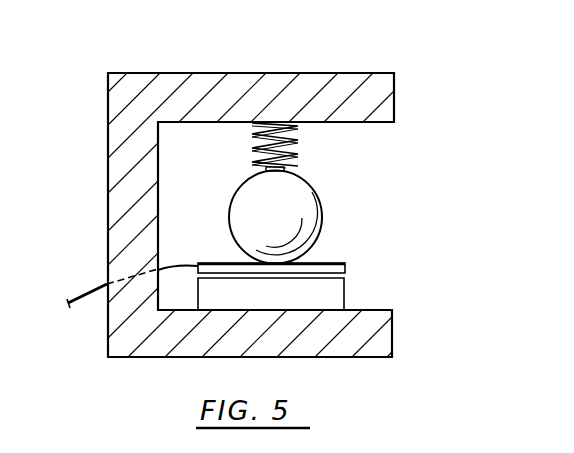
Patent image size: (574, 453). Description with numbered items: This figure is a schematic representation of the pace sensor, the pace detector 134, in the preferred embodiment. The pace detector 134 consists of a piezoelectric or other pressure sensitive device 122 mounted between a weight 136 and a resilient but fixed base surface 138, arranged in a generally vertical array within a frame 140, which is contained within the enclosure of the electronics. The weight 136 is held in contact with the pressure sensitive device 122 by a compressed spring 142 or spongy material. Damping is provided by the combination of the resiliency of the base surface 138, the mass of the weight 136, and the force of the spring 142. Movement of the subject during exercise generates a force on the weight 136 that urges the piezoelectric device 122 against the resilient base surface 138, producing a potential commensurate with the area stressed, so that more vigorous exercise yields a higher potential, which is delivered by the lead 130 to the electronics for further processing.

The pace detector 134 is at (199, 56).
The frame 140 is at (394, 96).
The compressed spring 142 is at (298, 149).
The weight 136 is at (324, 220).
The pressure sensitive device 122 is at (345, 266).
The base surface 138 is at (345, 298).
The lead 130 is at (94, 291).